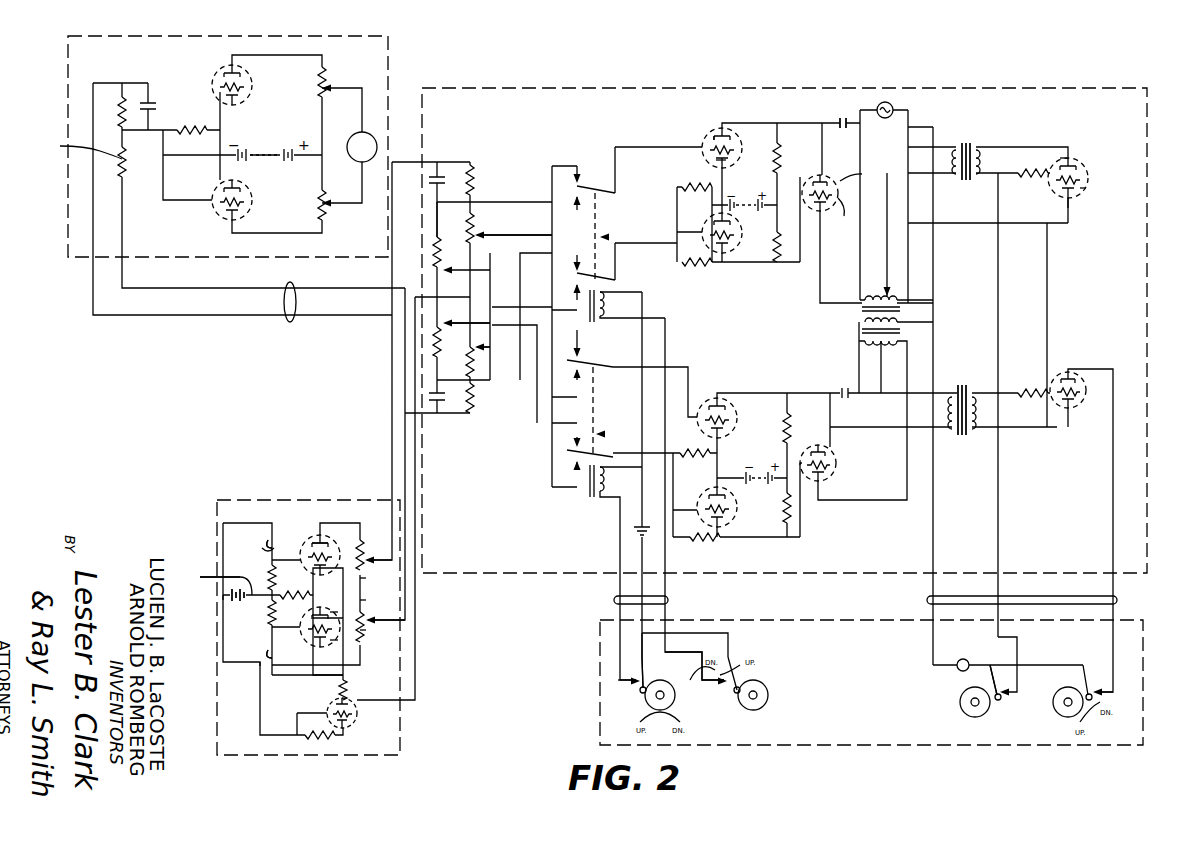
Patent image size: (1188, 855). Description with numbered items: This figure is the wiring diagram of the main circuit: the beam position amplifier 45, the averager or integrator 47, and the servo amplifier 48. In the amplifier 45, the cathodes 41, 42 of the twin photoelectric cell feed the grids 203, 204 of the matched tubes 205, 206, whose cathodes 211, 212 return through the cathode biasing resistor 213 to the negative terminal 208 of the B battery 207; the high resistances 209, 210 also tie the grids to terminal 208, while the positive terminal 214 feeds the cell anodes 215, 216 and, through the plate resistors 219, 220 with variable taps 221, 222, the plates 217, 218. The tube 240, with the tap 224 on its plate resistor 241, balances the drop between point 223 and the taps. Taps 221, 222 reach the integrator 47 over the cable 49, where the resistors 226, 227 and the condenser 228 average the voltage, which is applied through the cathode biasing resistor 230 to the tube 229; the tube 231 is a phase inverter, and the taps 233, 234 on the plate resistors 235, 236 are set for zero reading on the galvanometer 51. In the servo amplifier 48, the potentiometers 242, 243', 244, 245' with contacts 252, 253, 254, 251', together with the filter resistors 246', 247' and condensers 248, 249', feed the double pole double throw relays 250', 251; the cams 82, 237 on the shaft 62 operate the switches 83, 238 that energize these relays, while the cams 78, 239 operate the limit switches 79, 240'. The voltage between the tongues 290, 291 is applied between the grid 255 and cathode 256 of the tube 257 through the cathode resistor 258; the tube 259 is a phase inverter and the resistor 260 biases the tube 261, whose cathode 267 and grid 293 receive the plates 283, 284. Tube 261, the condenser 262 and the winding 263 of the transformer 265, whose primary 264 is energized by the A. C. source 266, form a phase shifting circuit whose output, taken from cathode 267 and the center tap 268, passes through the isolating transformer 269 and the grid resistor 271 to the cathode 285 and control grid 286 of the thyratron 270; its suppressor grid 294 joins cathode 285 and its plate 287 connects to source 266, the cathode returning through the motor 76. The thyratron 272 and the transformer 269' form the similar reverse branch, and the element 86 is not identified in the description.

The beam position amplifier 45 is at (262, 500).
The averager or integrator 47 is at (388, 50).
The servo amplifier 48 is at (1013, 88).
The cable 49 is at (292, 322).
The galvanometer 51 is at (353, 131).
The cathode of twin photoelectric cell 41 is at (284, 538).
The cathode of twin photoelectric cell 42 is at (287, 655).
The shaft 62 is at (664, 700).
The motor 76 is at (965, 658).
The cam 78 is at (1057, 692).
The lower limit switch 79 is at (1100, 690).
The cam 82 is at (770, 694).
The switch 83 is at (720, 670).
The cable 86 is at (668, 600).
The grid 203 is at (352, 558).
The grid 204 is at (360, 642).
The vacuum tube 205 is at (320, 536).
The vacuum tube 206 is at (340, 663).
The B battery 207 is at (242, 610).
The negative terminal 208 is at (204, 565).
The high resistance 209 is at (299, 586).
The high resistance 210 is at (291, 610).
The cathode 211 is at (322, 609).
The cathode 212 is at (343, 578).
The cathode biasing resistor 213 is at (272, 580).
The positive terminal 214 is at (223, 602).
The anode of twin photoelectric cell 215 is at (268, 538).
The anode of twin photoelectric cell 216 is at (262, 666).
The plate 217 is at (325, 540).
The plate 218 is at (310, 677).
The plate resistor 219 is at (366, 578).
The plate resistor 220 is at (402, 620).
The variable tap 221 is at (393, 550).
The variable tap 222 is at (390, 638).
The point 223 is at (366, 600).
The tap 224 is at (346, 688).
The resistor 226 is at (70, 146).
The resistor 227 is at (123, 96).
The condenser 228 is at (150, 105).
The vacuum tube 229 is at (218, 74).
The cathode biasing resistor 230 is at (205, 115).
The vacuum tube 231 is at (214, 213).
The tap 233 is at (326, 80).
The tap 234 is at (327, 217).
The plate resistor 235 is at (322, 86).
The plate resistor 236 is at (316, 196).
The cam 237 is at (644, 704).
The switch 238 is at (622, 681).
The cam 239 is at (965, 715).
The vacuum tube 240 is at (349, 744).
The upper limit switch 240' is at (963, 688).
The plate resistor 241 is at (330, 700).
The potentiometer 242 is at (428, 264).
The potentiometer 243' is at (514, 245).
The potentiometer 244 is at (433, 343).
The potentiometer 245' is at (497, 381).
The resistor 246' is at (499, 174).
The resistor 247' is at (491, 414).
The condenser 248 is at (430, 171).
The condenser 249' is at (397, 390).
The relay 250' is at (628, 236).
The relay 251 is at (603, 408).
The contact of potentiometer 245' 251' is at (495, 307).
The contact of potentiometer 242' 252 is at (446, 265).
The contact of potentiometer 243' 253 is at (476, 234).
The contact of potentiometer 244' 254 is at (463, 309).
The grid 255 is at (741, 132).
The cathode 256 is at (728, 160).
The tube 257 is at (706, 132).
The cathode resistor 258 is at (694, 186).
The tube 259 is at (736, 259).
The resistor 260 is at (695, 266).
The tube 261 is at (815, 184).
The condenser 262 is at (842, 118).
The transformer winding 263 is at (866, 295).
The primary 264 is at (903, 320).
The transformer 265 is at (856, 322).
The A. C. source 266 is at (899, 108).
The cathode 267 is at (870, 165).
The center tap 268 is at (902, 295).
The isolating transformer 269 is at (985, 145).
The isolation transformer 269' is at (969, 394).
The thyratron 270 is at (1078, 204).
The grid resistor 271 is at (1030, 178).
The thyratron 272 is at (1073, 408).
The plate 283 is at (716, 132).
The plate 284 is at (740, 250).
The cathode 285 is at (1068, 158).
The control grid 286 is at (1086, 173).
The plate 287 is at (1072, 218).
The tongue 290 is at (605, 187).
The tongue 291 is at (614, 278).
The grid 293 is at (841, 216).
The suppressor grid 294 is at (1087, 189).